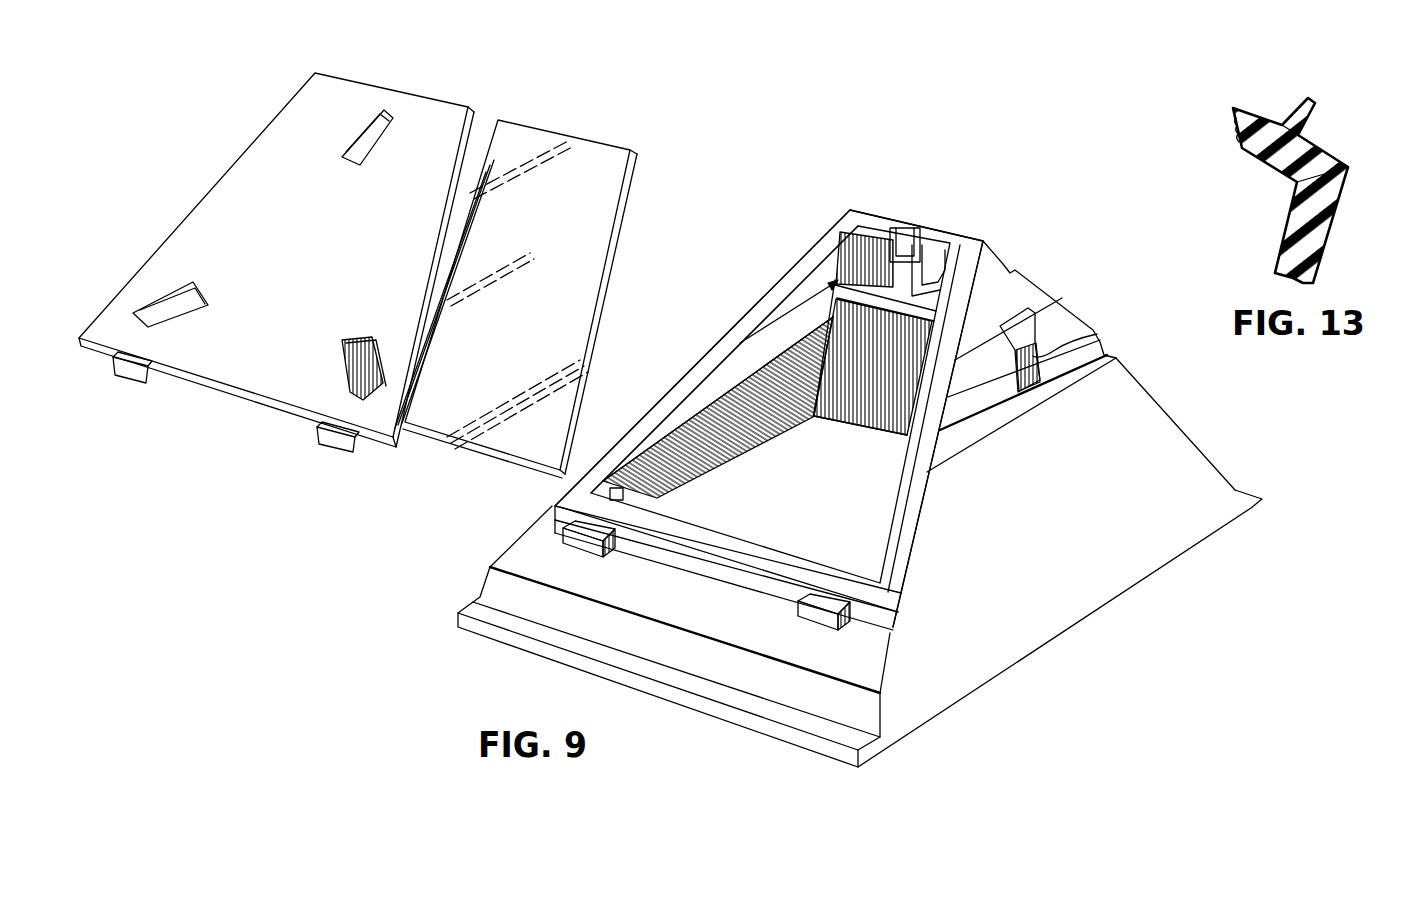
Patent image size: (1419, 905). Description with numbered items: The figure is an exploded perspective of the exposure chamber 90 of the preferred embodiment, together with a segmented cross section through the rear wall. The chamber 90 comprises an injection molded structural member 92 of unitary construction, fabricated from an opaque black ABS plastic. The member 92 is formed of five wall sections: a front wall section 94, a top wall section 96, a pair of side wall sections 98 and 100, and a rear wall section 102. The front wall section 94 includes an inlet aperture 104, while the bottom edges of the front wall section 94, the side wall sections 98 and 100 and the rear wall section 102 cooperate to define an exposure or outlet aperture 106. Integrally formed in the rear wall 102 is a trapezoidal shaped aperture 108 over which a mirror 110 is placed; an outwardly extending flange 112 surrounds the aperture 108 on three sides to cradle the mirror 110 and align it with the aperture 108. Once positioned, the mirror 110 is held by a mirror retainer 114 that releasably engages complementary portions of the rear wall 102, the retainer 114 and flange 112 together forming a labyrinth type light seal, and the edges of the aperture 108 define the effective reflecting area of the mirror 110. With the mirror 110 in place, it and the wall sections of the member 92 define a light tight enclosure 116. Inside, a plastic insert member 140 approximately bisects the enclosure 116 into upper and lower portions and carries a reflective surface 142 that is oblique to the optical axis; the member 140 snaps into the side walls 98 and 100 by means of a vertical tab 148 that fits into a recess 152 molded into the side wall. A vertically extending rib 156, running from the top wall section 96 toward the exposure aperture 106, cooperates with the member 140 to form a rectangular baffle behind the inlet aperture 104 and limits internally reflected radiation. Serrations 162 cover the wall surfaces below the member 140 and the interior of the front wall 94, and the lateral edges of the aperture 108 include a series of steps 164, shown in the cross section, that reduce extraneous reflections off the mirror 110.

In FIG. 9, the exposure chamber 90 is at (943, 218).
In FIG. 9, the structural member 92 is at (1158, 390).
In FIG. 9, the front wall section 94 is at (885, 412).
In FIG. 9, the top wall section 96 is at (864, 217).
In FIG. 9, the side wall section 98 is at (1196, 471).
In FIG. 9, the side wall section 100 is at (780, 410).
In FIG. 13, the side wall section 100 is at (1315, 237).
In FIG. 9, the rear wall section 102 is at (540, 560).
In FIG. 13, the rear wall section 102 is at (1315, 150).
In FIG. 9, the inlet aperture 104 is at (945, 254).
In FIG. 9, the exposure aperture 106 is at (737, 465).
In FIG. 9, the trapezoidal shaped aperture 108 is at (787, 533).
In FIG. 9, the mirror 110 is at (603, 143).
In FIG. 9, the outwardly extending flange 112 is at (812, 237).
In FIG. 13, the outwardly extending flange 112 is at (1310, 102).
In FIG. 9, the mirror retainer 114 is at (250, 144).
In FIG. 9, the light tight enclosure 116 is at (890, 488).
In FIG. 9, the member 140 is at (740, 352).
In FIG. 9, the reflective surface 142 is at (767, 317).
In FIG. 9, the vertical tab 148 is at (1090, 335).
In FIG. 9, the recess 152 is at (1052, 299).
In FIG. 9, the vertically extending rib 156 is at (901, 253).
In FIG. 9, the serrations 162 is at (678, 470).
In FIG. 13, the steps 164 is at (1242, 138).